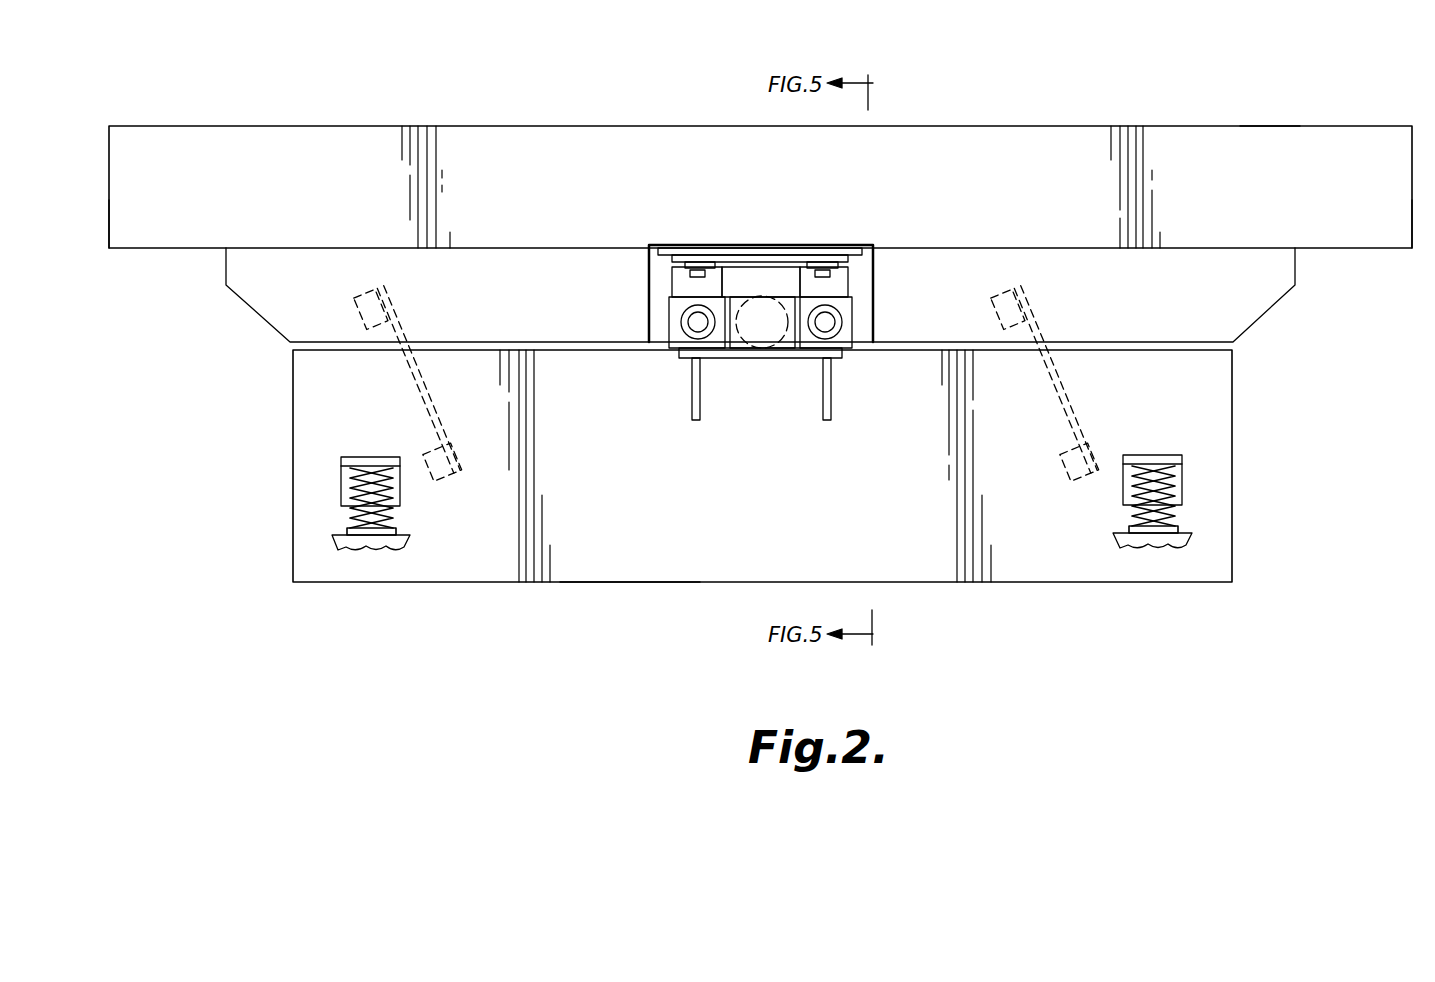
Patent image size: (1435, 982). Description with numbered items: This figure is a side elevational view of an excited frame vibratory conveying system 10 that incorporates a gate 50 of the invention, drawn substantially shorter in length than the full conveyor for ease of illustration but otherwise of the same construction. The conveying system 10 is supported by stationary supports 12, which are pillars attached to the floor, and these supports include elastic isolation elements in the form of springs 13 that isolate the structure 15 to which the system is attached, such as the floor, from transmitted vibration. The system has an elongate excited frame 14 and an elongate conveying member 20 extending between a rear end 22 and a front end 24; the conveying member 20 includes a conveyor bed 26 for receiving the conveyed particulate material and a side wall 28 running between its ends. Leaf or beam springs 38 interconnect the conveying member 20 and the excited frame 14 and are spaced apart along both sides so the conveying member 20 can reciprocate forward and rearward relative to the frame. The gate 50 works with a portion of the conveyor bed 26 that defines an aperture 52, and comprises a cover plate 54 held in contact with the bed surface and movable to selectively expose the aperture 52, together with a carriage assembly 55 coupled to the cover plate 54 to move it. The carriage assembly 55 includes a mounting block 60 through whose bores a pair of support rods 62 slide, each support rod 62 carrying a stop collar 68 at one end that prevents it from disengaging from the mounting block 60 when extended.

The excited frame vibratory conveying system 10 is at (615, 595).
The stationary supports 12 is at (362, 457).
The springs 13 is at (396, 526).
The excited frame 14 is at (1222, 418).
The structure 15 is at (405, 546).
The conveying member 20 is at (1068, 110).
The rear end 22 is at (109, 240).
The front end 24 is at (1412, 232).
The conveyor bed 26 is at (1335, 251).
The side wall 28 is at (1265, 138).
The leaf or beam springs 38 is at (416, 398).
The gate 50 is at (793, 287).
The aperture 52 is at (832, 246).
The cover plate 54 is at (899, 247).
The carriage assembly 55 is at (793, 342).
The mounting block 60 is at (680, 345).
The support rods 62 is at (802, 360).
The stop collar 68 is at (812, 331).